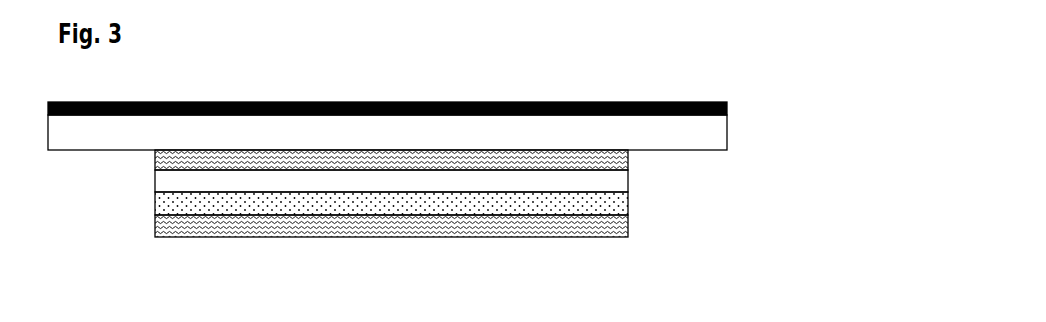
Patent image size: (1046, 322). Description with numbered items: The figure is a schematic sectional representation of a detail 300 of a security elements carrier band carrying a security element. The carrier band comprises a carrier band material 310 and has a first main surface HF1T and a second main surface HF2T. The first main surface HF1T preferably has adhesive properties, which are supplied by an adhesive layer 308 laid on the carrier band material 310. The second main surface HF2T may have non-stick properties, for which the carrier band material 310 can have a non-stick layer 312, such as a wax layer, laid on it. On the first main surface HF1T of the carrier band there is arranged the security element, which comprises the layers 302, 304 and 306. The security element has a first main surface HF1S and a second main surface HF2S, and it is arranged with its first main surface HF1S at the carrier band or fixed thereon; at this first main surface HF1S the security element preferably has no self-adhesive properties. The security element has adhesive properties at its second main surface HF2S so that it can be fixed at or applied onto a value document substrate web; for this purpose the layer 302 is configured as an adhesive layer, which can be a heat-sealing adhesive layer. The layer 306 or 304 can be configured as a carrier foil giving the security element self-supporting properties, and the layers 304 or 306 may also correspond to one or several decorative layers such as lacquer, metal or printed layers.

The detail of a security elements carrier band 300 is at (431, 86).
The adhesive layer 302 is at (145, 232).
The layer 304 is at (641, 207).
The layer 306 is at (148, 182).
The adhesive layer 308 is at (149, 159).
The carrier band material 310 is at (387, 132).
The non-stick layer 312 is at (739, 97).
The second main surface of the security elements carrier band HF2T is at (748, 106).
The first main surface of the security elements carrier band HF1T is at (751, 161).
The first main surface of the security element HF1S is at (636, 174).
The second main surface of the security element HF2S is at (640, 238).